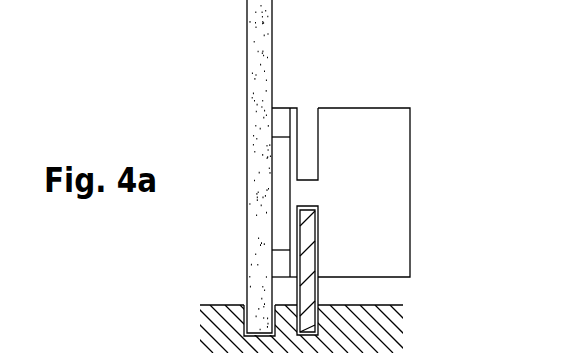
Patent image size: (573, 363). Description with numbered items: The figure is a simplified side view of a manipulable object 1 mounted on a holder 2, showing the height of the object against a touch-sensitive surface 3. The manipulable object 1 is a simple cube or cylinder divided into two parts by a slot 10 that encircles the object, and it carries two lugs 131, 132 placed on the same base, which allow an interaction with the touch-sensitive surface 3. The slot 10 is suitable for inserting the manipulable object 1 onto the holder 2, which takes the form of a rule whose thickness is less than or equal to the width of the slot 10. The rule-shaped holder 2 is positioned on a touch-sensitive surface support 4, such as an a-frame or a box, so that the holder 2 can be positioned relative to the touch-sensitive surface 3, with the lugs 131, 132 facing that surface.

The touch-sensitive surface 3 is at (234, 47).
The slot 10 is at (311, 99).
The lug 131 is at (285, 100).
The lug 132 is at (259, 265).
The manipulable object 1 is at (407, 167).
The holder 2 is at (321, 245).
The touch-sensitive surface support 4 is at (391, 327).